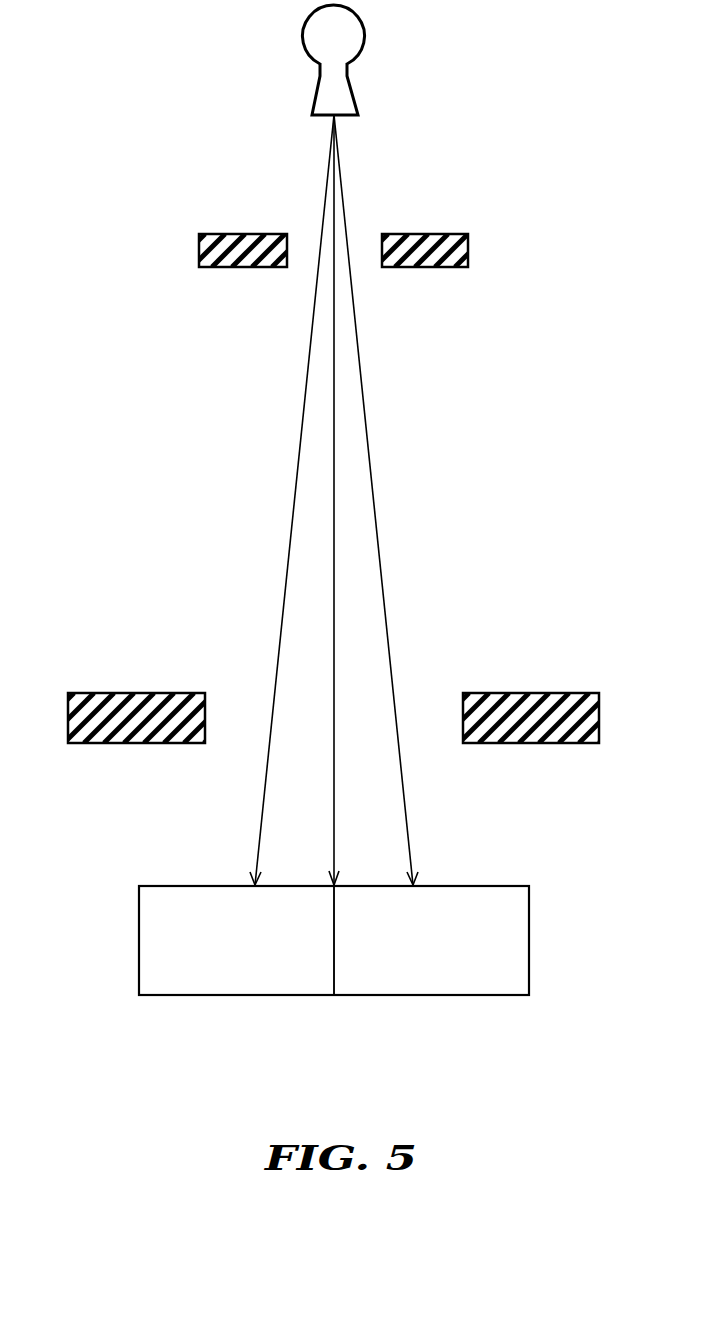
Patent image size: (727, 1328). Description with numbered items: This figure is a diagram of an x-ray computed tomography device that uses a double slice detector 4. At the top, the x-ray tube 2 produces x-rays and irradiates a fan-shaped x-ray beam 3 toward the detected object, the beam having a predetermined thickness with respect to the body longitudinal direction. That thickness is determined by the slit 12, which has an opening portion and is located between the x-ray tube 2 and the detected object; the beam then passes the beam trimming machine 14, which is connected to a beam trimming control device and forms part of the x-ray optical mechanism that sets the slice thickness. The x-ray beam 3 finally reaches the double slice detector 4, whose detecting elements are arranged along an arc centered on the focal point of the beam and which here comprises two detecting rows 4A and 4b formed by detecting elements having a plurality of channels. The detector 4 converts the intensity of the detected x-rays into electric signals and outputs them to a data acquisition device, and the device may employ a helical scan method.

The x-ray tube 2 is at (366, 39).
The x-ray beam 3 is at (374, 487).
The slit 12 is at (468, 250).
The beam trimming machine 14 is at (553, 693).
The double slice detector 4 is at (357, 974).
The first detecting row 4A is at (227, 995).
The second detecting row 4b is at (502, 995).